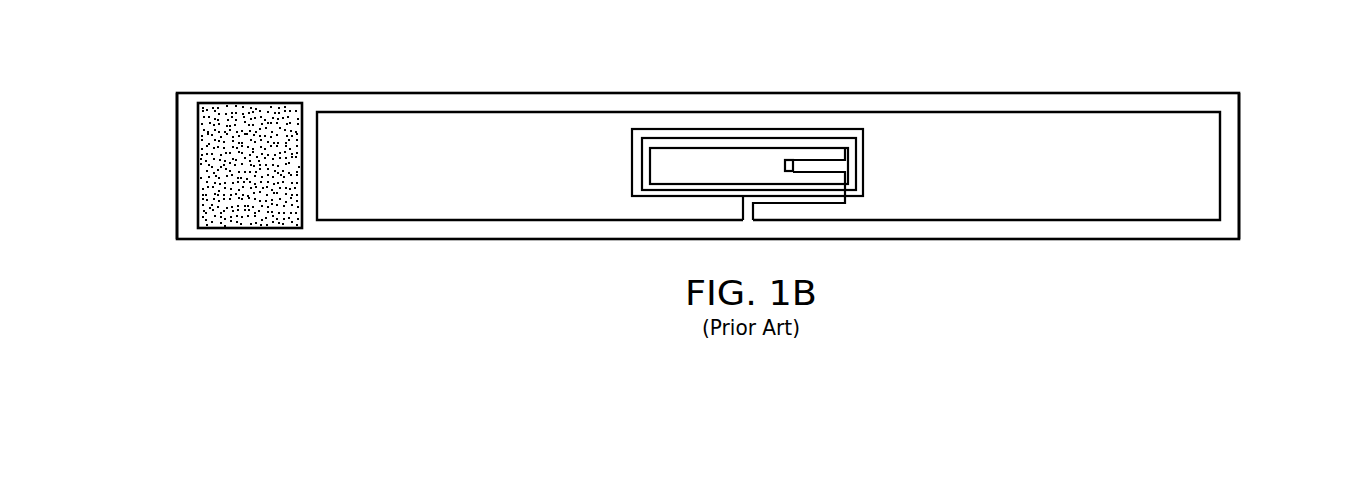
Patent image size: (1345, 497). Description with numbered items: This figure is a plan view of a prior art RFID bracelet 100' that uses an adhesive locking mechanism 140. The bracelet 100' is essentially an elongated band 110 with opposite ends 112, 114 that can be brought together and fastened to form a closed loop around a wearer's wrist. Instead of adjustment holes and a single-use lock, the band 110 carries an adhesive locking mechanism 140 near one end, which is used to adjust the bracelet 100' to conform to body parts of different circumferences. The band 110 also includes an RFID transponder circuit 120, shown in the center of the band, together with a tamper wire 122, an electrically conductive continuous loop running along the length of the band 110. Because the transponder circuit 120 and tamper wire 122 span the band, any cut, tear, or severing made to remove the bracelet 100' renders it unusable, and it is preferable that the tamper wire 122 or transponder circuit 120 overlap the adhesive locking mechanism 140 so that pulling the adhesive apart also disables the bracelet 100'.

The RFID bracelet 100' is at (709, 149).
The band 110 is at (518, 93).
The end of band 112 is at (1239, 165).
The end of band 114 is at (177, 165).
The RFID transponder circuit 120 is at (785, 165).
The tamper wire 122 is at (522, 220).
The adhesive locking mechanism 140 is at (261, 228).